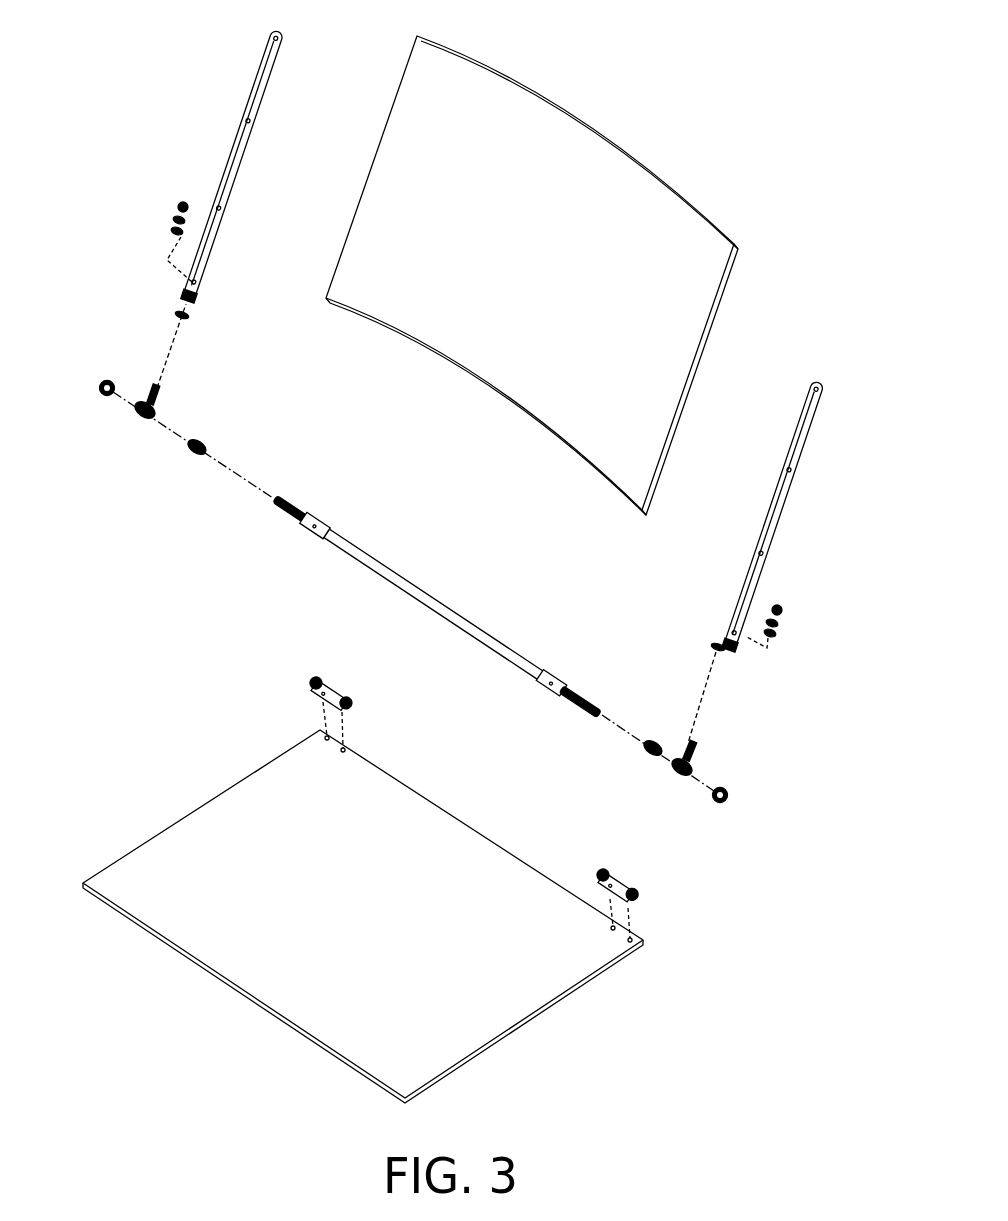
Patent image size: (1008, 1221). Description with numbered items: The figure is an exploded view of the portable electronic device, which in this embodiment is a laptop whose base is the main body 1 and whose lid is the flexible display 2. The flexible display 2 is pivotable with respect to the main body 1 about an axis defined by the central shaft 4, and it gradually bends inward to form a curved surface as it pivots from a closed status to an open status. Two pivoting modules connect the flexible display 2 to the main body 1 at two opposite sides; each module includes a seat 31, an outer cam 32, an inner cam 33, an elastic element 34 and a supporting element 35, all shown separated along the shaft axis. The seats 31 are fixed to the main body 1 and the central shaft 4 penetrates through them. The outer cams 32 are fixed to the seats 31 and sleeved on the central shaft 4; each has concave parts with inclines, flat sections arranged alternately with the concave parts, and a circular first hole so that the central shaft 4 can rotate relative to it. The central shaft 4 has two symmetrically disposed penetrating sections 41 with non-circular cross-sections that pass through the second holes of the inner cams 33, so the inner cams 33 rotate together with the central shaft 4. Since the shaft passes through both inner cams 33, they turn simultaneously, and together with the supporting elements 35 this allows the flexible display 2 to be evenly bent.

The main body 1 is at (520, 1010).
The flexible display 2 is at (594, 99).
The central shaft 4 is at (415, 634).
The seat 31 is at (312, 683).
The outer cam 32 is at (100, 382).
The inner cam 33 is at (140, 420).
The elastic element 34 is at (192, 457).
The supporting element 35 is at (237, 152).
The penetrating section 41 is at (287, 513).